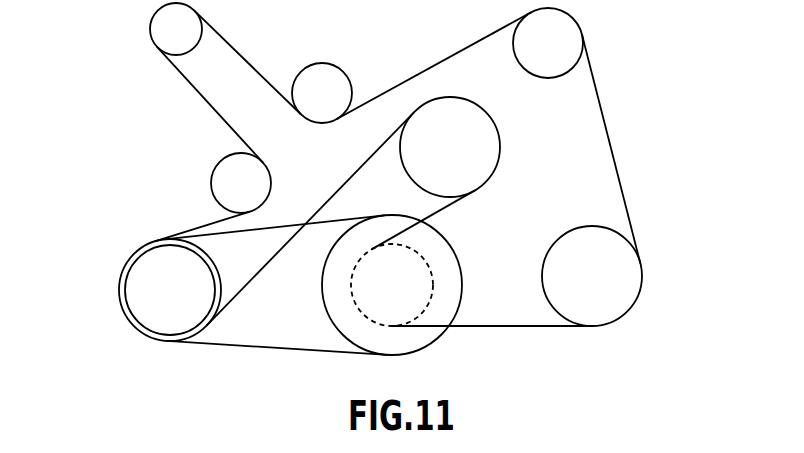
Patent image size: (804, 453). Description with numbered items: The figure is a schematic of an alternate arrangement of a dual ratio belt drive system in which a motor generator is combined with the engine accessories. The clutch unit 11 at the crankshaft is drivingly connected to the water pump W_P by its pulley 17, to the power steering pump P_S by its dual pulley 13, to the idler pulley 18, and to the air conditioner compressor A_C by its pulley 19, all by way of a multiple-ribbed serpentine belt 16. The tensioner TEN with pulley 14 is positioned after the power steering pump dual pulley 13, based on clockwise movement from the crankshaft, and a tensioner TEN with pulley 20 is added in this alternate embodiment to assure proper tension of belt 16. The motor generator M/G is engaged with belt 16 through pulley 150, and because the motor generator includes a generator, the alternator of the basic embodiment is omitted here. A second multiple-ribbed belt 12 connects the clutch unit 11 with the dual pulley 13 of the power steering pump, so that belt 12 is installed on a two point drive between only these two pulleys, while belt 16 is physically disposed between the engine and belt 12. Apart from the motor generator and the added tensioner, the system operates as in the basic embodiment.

The pulley 150 is at (150, 33).
The tensioner pulley 20 is at (333, 67).
The multiple-ribbed serpentine belt 16 is at (445, 59).
The idler pulley 18 is at (583, 40).
The water pump pulley 17 is at (488, 138).
The tensioner pulley 14 is at (212, 190).
The dual pulley 13 is at (150, 320).
The second multiple-ribbed belt 12 is at (262, 348).
The clutch unit 11 is at (418, 333).
The air conditioner compressor pulley 19 is at (597, 308).